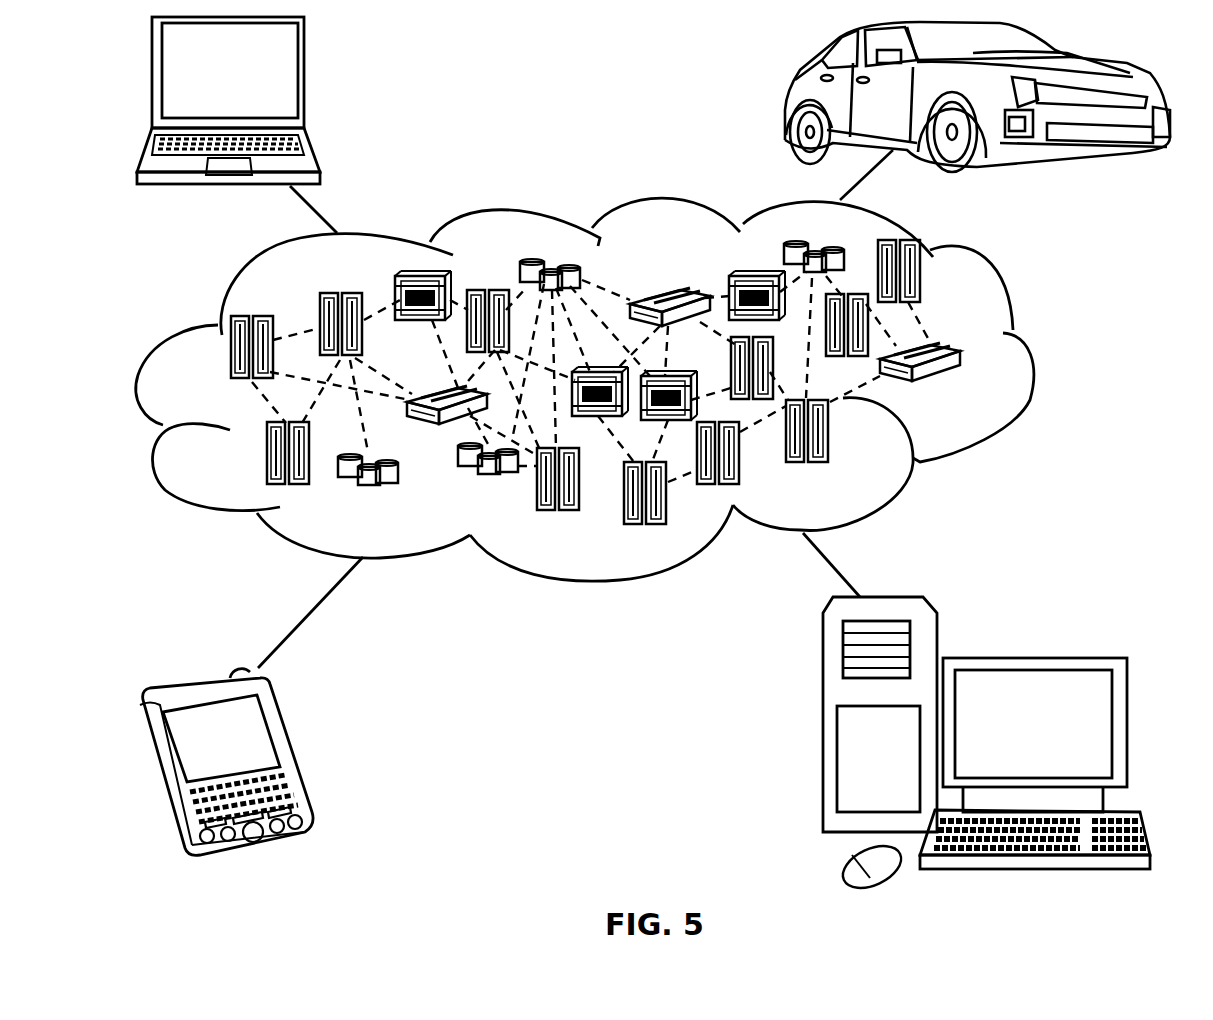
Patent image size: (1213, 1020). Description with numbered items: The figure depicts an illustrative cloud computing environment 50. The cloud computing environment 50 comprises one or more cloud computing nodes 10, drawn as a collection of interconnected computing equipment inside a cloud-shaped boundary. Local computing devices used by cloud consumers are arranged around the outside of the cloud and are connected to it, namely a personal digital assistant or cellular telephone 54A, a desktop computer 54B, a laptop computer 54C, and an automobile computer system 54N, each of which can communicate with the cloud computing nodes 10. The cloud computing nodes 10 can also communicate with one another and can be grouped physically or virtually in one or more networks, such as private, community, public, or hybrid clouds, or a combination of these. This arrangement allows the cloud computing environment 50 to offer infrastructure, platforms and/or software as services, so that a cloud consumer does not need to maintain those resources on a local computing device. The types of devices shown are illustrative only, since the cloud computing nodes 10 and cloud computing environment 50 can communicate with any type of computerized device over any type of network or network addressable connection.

The cloud computing environment 50 is at (1035, 362).
The cloud computing node 10 is at (980, 396).
The personal digital assistant or cellular telephone 54A is at (296, 752).
The desktop computer 54B is at (1032, 657).
The laptop computer 54C is at (304, 80).
The automobile computer system 54N is at (790, 94).